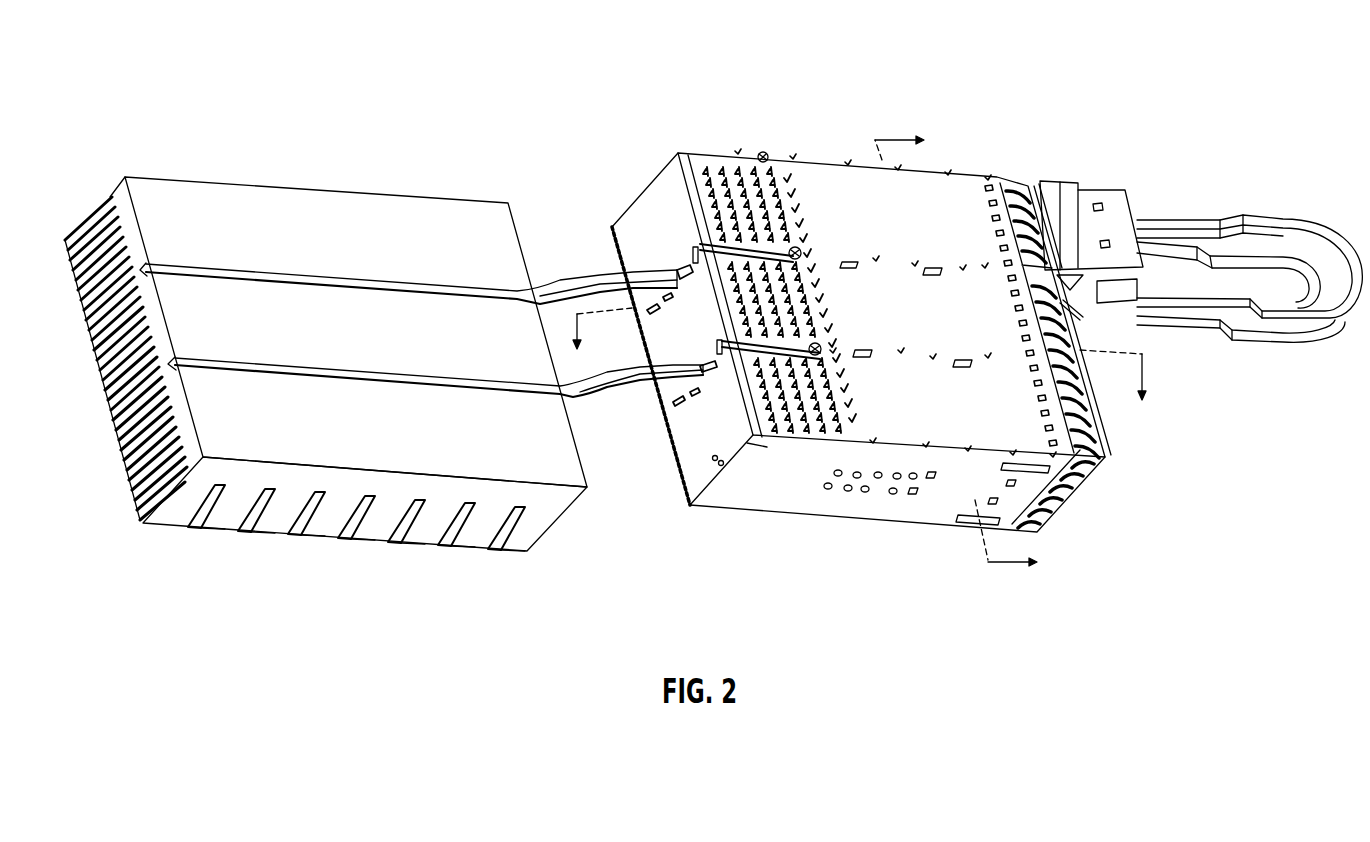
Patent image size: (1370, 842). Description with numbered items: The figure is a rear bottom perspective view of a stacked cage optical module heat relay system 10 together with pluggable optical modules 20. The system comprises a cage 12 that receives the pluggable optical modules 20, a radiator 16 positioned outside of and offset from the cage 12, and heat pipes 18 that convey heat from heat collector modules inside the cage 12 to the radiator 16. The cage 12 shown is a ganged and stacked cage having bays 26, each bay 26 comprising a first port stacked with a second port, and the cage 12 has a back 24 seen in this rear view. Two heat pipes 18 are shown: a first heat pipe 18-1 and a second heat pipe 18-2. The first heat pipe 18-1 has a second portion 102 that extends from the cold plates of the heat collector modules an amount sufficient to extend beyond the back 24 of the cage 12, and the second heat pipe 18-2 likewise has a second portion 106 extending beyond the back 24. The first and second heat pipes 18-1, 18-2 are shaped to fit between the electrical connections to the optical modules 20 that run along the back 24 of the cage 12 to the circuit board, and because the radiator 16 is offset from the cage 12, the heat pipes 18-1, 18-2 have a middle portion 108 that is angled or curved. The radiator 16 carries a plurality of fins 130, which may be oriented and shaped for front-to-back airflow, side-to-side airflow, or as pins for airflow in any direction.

The stacked cage optical module heat relay system 10 is at (1268, 47).
The cage 12 is at (732, 153).
The radiator 16 is at (150, 176).
The heat pipe 18 is at (565, 398).
The first heat pipe 18-1 is at (595, 398).
The second heat pipe 18-2 is at (562, 288).
The pluggable optical module 20 is at (1268, 218).
The back 24 is at (652, 198).
The bay 26 is at (963, 290).
The second portion 102 is at (248, 278).
The second portion 106 is at (252, 368).
The middle portion 108 is at (602, 273).
The fins 130 is at (165, 523).